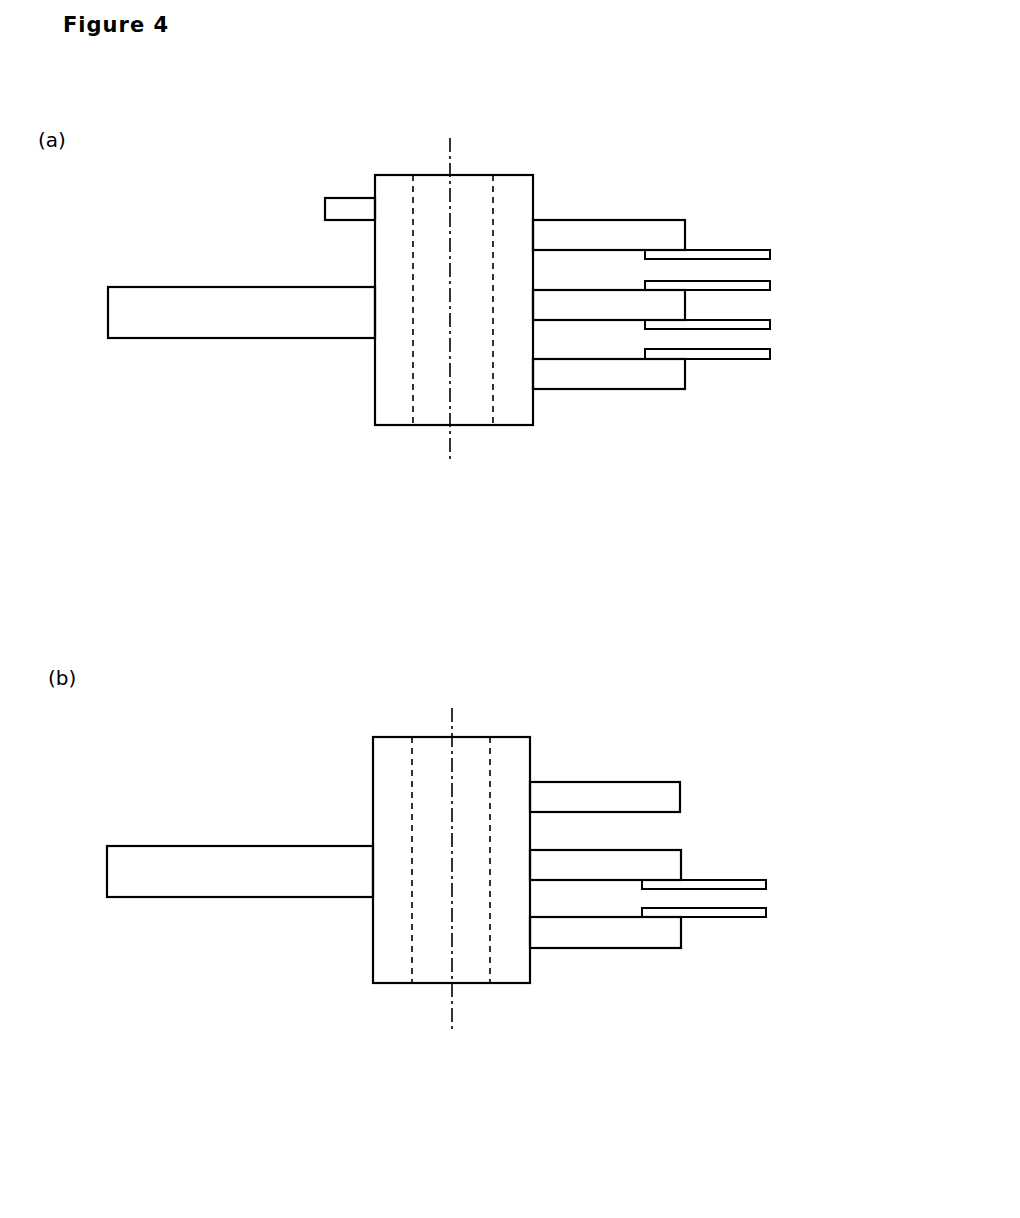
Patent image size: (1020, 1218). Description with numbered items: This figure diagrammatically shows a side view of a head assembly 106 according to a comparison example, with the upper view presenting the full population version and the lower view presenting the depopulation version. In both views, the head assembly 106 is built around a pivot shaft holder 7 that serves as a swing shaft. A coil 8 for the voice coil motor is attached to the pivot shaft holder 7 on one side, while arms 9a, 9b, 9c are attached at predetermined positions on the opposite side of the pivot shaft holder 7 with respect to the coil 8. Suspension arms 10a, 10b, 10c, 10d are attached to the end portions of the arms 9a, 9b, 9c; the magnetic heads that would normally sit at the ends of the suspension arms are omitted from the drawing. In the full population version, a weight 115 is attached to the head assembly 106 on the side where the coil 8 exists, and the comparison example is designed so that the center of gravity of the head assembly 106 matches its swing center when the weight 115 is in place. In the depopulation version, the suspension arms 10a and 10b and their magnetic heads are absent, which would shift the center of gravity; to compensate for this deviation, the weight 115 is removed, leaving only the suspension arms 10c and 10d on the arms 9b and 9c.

The pivot shaft holder 7 is at (377, 410).
The coil for VCM 8 is at (295, 337).
The arm 9a is at (583, 220).
The arm 9b is at (588, 317).
The arm 9c is at (660, 388).
The suspension arm 10a is at (745, 248).
The suspension arm 10b is at (747, 278).
The suspension arm 10c is at (758, 328).
The suspension arm 10d is at (727, 358).
The head assembly 106 is at (265, 198).
The weight 115 is at (352, 198).